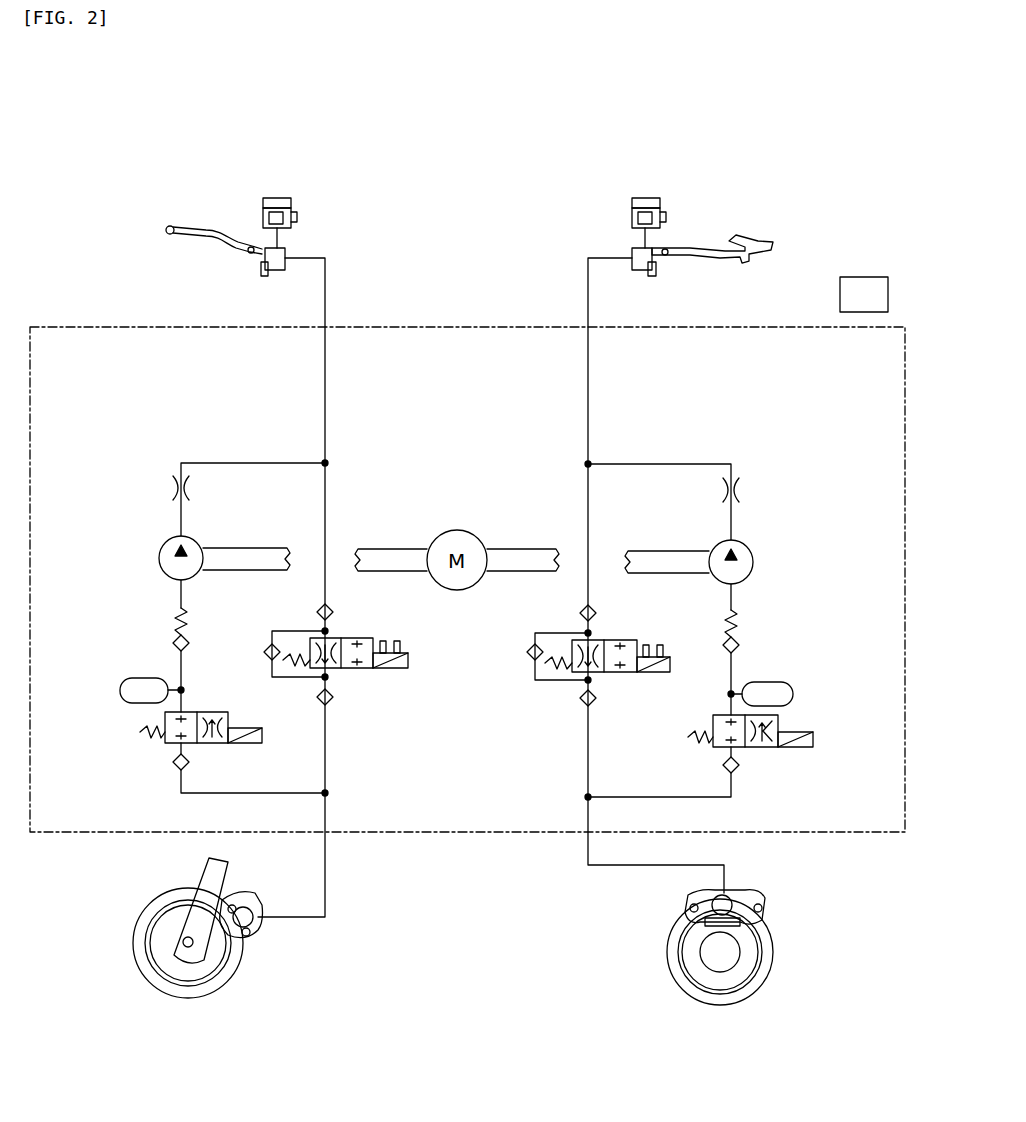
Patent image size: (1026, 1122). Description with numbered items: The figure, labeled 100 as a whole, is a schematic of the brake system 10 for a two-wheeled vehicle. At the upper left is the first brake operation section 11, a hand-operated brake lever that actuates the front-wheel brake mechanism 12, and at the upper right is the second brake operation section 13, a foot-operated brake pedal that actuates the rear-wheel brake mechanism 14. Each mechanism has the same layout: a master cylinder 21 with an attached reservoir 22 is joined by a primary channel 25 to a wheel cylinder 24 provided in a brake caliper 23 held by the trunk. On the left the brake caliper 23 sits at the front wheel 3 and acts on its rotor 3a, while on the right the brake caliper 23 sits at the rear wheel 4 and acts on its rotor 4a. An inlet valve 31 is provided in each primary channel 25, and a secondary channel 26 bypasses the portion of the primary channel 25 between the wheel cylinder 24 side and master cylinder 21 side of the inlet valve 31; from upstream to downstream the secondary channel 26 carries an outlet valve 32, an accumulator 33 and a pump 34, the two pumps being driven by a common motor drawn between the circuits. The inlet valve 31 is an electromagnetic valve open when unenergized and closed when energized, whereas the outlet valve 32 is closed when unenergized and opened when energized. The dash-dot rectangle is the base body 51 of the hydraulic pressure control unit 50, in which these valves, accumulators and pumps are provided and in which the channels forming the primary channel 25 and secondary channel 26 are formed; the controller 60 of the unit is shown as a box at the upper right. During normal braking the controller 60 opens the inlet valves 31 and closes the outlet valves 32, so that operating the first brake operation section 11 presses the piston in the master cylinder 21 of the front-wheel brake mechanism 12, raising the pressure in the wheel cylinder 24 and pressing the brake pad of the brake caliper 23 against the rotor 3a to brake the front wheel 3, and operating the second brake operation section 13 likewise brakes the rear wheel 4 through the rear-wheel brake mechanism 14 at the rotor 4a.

The brake system 100 is at (894, 86).
The brake system 10 is at (127, 216).
The first brake operation section 11 is at (200, 231).
The front-wheel brake mechanism 12 is at (363, 145).
The second brake operation section 13 is at (744, 240).
The rear-wheel brake mechanism 14 is at (558, 145).
The master cylinder 21 is at (283, 273).
The reservoir 22 is at (277, 196).
The brake caliper 23 is at (250, 899).
The wheel cylinder 24 is at (262, 924).
The primary channel 25 is at (324, 402).
The secondary channel 26 is at (258, 462).
The front wheel 3 is at (212, 970).
The rotor of the front wheel 3a is at (232, 972).
The rear wheel 4 is at (692, 991).
The rotor of the rear wheel 4a is at (680, 980).
The inlet valve 31 is at (366, 671).
The outlet valve 32 is at (213, 711).
The accumulator 33 is at (143, 677).
The pump 34 is at (158, 559).
The hydraulic pressure control unit 50 is at (798, 242).
The base body 51 is at (58, 326).
The controller 60 is at (865, 276).